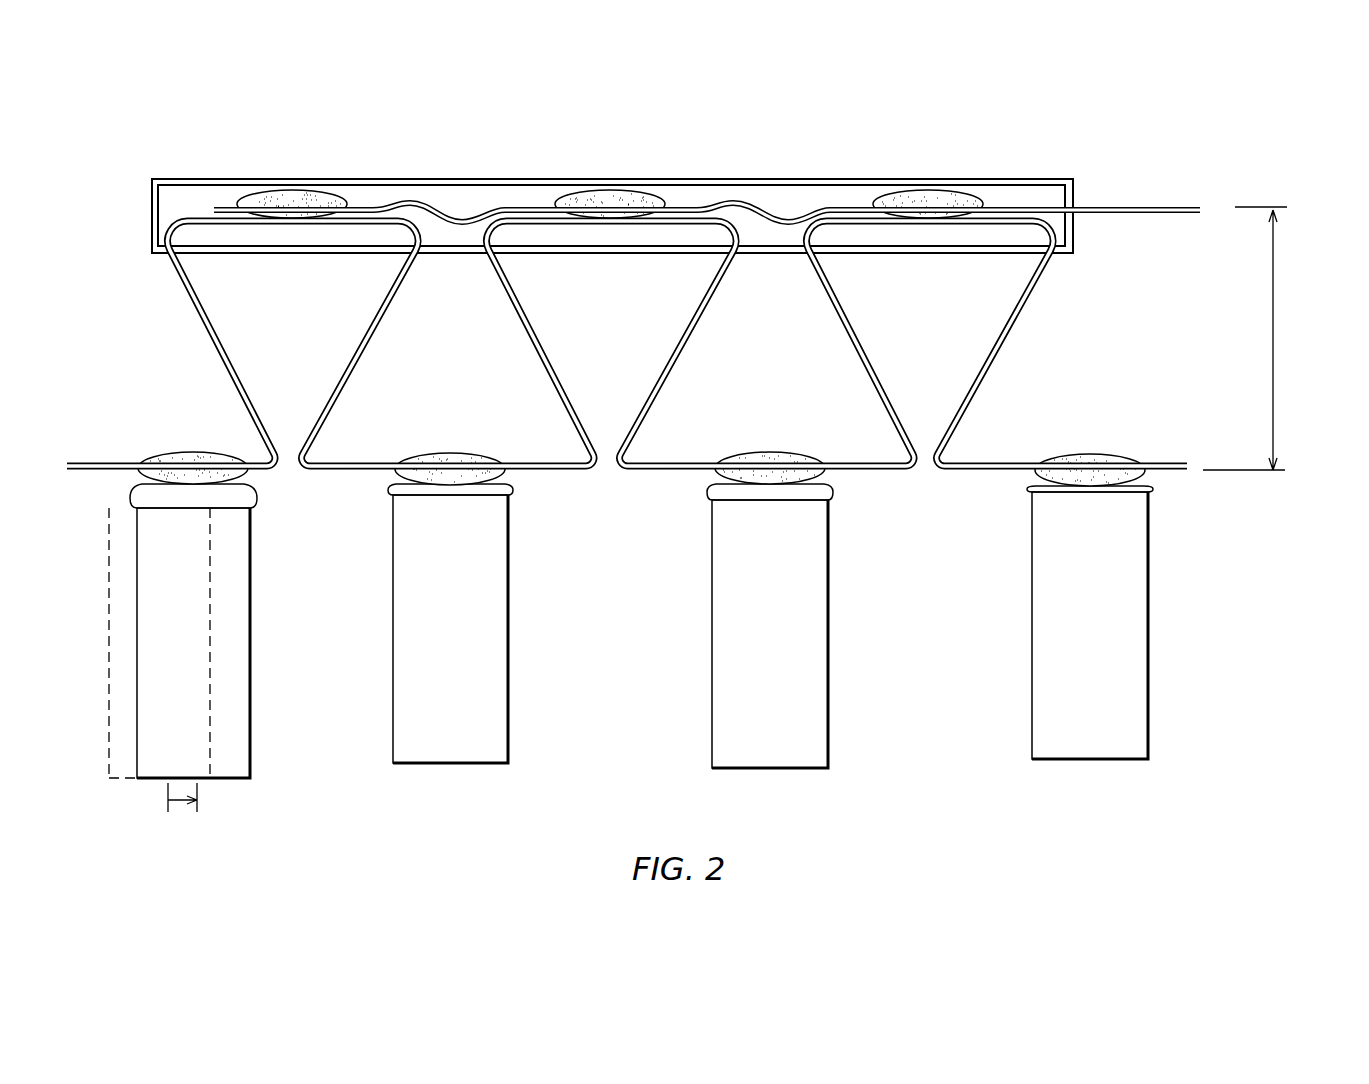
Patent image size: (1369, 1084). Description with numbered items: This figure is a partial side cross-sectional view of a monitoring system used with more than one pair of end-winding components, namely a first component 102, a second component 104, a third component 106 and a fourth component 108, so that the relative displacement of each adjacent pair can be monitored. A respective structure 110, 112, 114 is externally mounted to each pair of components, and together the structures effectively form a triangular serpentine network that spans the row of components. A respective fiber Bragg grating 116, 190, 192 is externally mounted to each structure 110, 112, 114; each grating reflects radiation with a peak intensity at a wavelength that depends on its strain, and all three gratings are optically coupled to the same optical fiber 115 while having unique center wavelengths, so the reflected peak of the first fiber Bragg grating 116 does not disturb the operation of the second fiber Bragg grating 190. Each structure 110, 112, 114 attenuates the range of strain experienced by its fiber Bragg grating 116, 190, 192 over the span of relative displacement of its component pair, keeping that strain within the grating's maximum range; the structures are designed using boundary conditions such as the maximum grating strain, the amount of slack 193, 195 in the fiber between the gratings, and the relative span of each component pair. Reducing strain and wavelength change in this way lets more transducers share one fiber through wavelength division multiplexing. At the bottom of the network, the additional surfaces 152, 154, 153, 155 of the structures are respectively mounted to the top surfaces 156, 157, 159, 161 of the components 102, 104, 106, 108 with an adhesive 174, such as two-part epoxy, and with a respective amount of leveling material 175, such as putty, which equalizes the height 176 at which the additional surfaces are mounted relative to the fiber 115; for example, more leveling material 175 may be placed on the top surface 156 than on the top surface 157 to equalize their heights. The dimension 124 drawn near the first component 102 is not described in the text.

The component 102 is at (272, 688).
The component 104 is at (530, 688).
The component 106 is at (850, 690).
The component 108 is at (1170, 688).
The structure 110 is at (383, 371).
The structure 112 is at (707, 371).
The structure 114 is at (1025, 371).
The optical fiber 115 is at (1148, 187).
The fiber Bragg grating 116 is at (305, 156).
The cell displacement distance 124 is at (172, 802).
The additional surface 152 is at (112, 462).
The additional surface 153 is at (848, 461).
The additional surface 154 is at (530, 461).
The additional surface 155 is at (1163, 463).
The top surface 156 is at (180, 510).
The top surface 157 is at (445, 498).
The top surface 159 is at (765, 503).
The top surface 161 is at (1085, 495).
The adhesive 174 is at (200, 455).
The leveling material 175 is at (260, 494).
The height 176 is at (1278, 335).
The fiber Bragg grating 190 is at (622, 157).
The fiber Bragg grating 192 is at (941, 157).
The slack 193 is at (450, 196).
The slack 195 is at (770, 197).